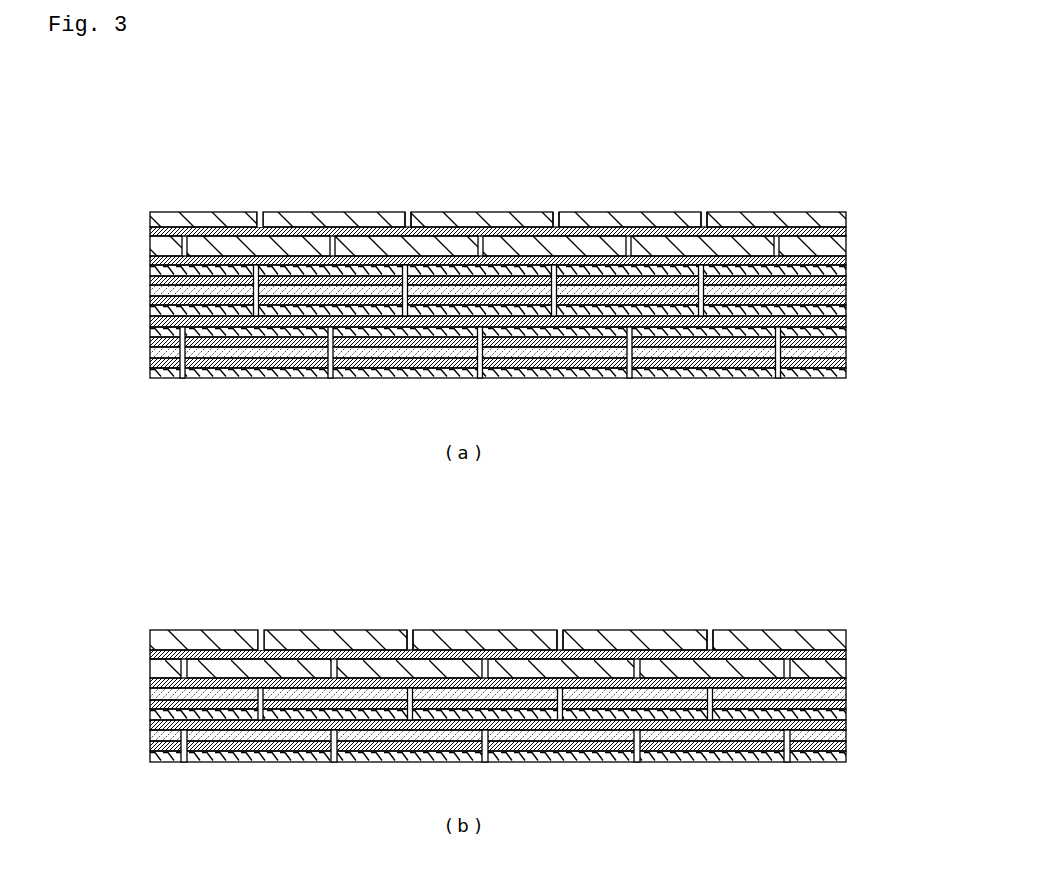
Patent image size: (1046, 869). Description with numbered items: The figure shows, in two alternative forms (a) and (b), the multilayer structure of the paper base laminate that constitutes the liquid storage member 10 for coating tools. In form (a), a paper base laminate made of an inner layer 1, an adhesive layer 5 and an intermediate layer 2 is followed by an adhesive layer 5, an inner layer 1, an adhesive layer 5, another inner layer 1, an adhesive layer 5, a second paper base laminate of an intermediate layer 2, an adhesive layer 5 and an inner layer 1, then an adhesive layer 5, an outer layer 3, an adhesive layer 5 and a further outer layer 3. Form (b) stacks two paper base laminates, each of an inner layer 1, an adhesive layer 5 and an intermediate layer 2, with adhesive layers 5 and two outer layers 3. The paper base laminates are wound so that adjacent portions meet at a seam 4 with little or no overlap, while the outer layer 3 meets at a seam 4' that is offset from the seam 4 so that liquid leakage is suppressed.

The liquid storage member 10 is at (454, 477).
The inner layer 1 is at (150, 270).
The intermediate layer 2 is at (150, 291).
The outer layer 3 is at (163, 220).
The seam 4 is at (485, 541).
The seam of outer layer 4' is at (485, 393).
The adhesive layer 5 is at (150, 231).